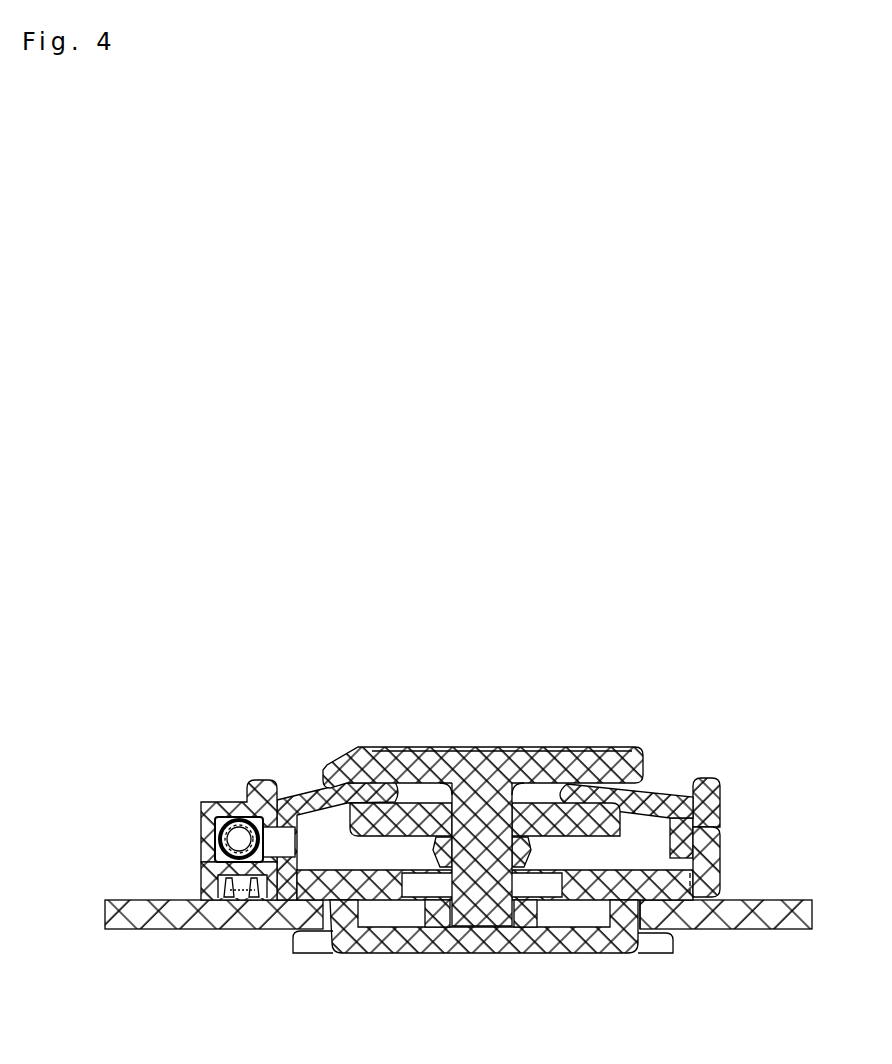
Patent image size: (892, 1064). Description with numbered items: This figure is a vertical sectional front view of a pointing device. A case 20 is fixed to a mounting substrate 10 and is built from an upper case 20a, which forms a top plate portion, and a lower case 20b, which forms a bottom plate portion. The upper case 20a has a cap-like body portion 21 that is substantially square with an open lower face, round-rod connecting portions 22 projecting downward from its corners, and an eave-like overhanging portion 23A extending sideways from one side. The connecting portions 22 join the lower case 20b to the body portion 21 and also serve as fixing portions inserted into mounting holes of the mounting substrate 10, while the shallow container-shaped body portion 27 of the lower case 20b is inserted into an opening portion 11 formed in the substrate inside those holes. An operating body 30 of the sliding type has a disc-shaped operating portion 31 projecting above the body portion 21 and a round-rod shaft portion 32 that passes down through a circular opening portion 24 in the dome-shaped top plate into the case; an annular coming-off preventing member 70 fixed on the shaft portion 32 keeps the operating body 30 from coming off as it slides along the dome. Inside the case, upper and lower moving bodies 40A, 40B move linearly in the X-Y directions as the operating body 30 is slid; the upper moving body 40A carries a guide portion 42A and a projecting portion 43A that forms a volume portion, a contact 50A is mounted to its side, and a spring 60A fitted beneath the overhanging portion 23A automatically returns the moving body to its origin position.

The mounting substrate 10 is at (805, 930).
The opening portion 11 is at (653, 944).
The case 20 is at (547, 864).
The upper case 20a is at (735, 789).
The lower case 20b is at (479, 973).
The body portion 21 is at (305, 787).
The connecting portions 22 is at (310, 955).
The overhanging portion 23A is at (212, 800).
The opening portion 24 is at (552, 786).
The body portion 27 is at (420, 954).
The operating body 30 is at (483, 829).
The operating portion 31 is at (412, 747).
The shaft portion 32 is at (483, 907).
The moving body 40A is at (767, 845).
The moving body 40B is at (547, 916).
The guide portion 42A is at (723, 836).
The projecting portion 43A is at (200, 870).
The contact 50A is at (243, 903).
The spring 60A is at (200, 842).
The coming-off preventing member 70 is at (650, 797).